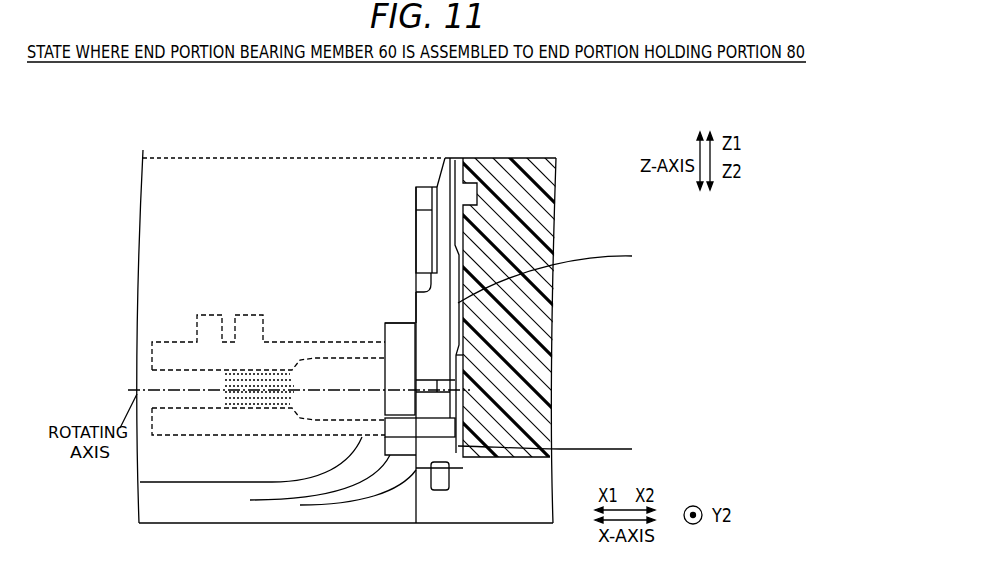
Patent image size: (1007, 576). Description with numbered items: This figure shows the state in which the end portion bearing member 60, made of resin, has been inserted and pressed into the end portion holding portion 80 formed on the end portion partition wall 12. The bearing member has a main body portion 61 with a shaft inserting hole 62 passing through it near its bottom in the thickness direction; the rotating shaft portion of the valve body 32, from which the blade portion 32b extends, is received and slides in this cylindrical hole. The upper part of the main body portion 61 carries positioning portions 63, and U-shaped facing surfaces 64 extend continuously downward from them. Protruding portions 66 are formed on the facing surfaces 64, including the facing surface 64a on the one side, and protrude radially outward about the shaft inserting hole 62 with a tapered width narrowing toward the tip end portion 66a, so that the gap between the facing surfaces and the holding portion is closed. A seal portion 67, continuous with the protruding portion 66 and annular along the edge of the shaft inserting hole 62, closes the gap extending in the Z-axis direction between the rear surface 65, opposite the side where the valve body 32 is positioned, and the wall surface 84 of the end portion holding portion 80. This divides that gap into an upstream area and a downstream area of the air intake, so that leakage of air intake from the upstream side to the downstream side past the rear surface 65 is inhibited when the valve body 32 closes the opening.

The end portion partition wall 12 is at (495, 292).
The valve body 32 is at (180, 212).
The blade portion 32b is at (553, 333).
The end portion bearing member 60 is at (461, 134).
The main body portion 61 is at (426, 186).
The shaft inserting hole 62 is at (436, 460).
The positioning portion 63 is at (416, 291).
The facing surface 64 is at (329, 362).
The facing surface of the one side 64a is at (427, 313).
The rear surface 65 is at (458, 330).
The protruding portion 66 is at (460, 432).
The tip end portion 66a is at (440, 394).
The seal portion 67 is at (458, 360).
The end portion holding portion 80 is at (495, 307).
The wall surface 84 is at (470, 262).